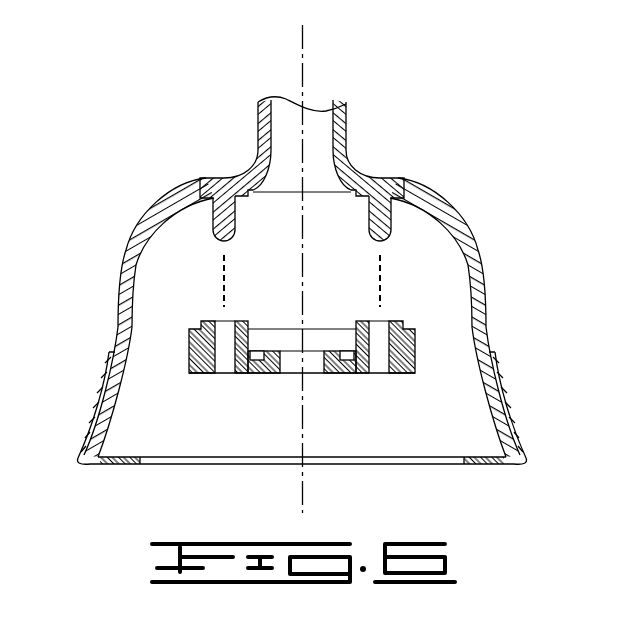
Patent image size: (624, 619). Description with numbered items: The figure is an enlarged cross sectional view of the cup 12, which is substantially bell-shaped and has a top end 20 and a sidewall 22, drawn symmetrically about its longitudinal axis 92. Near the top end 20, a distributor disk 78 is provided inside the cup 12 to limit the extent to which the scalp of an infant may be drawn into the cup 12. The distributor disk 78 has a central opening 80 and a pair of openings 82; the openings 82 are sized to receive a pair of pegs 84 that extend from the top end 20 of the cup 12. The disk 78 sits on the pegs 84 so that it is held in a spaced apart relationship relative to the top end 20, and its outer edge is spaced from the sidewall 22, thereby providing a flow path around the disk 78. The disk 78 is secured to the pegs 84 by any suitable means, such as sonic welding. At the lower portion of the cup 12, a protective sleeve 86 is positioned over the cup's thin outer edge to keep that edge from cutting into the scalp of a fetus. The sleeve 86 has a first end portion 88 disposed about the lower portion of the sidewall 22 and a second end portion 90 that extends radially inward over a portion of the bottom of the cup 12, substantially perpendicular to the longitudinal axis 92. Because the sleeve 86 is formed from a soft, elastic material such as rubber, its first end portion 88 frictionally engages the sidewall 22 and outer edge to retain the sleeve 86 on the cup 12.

The cup 12 is at (306, 346).
The top end 20 is at (330, 202).
The sidewall 22 is at (118, 272).
The distributor disk 78 is at (315, 346).
The central opening 80 is at (287, 357).
The openings 82 is at (227, 373).
The pegs 84 is at (232, 242).
The protective sleeve 86 is at (500, 403).
The first end portion 88 is at (108, 384).
The second end portion 90 is at (113, 464).
The longitudinal axis 92 is at (303, 37).